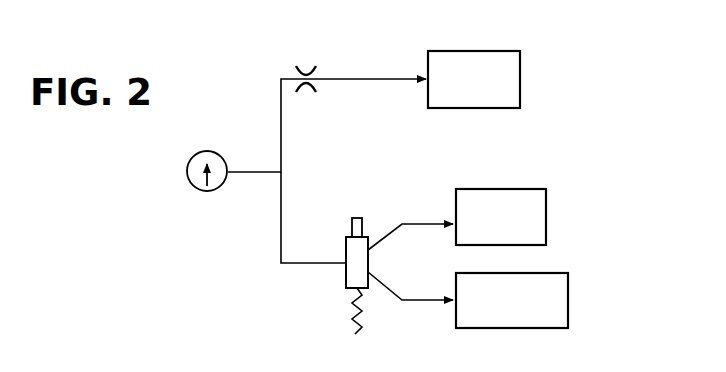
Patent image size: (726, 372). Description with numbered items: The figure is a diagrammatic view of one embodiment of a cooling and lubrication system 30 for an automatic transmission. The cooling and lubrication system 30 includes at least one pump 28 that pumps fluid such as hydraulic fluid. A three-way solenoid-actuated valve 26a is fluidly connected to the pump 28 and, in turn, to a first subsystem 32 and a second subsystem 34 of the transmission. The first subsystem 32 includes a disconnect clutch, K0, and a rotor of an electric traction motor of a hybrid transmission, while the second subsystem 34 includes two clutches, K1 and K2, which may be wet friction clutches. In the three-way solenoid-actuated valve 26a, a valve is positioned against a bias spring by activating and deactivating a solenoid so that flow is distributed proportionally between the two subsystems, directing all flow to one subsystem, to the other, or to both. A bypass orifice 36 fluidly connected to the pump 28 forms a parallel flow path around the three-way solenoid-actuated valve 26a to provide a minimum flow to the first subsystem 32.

The cooling and lubrication system 30 is at (250, 60).
The pump 28 is at (215, 196).
The bypass orifice 36 is at (306, 75).
The first subsystem 32 is at (497, 51).
The 3-way solenoid-actuated valve 26a is at (342, 281).
The second subsystem 34 is at (568, 300).